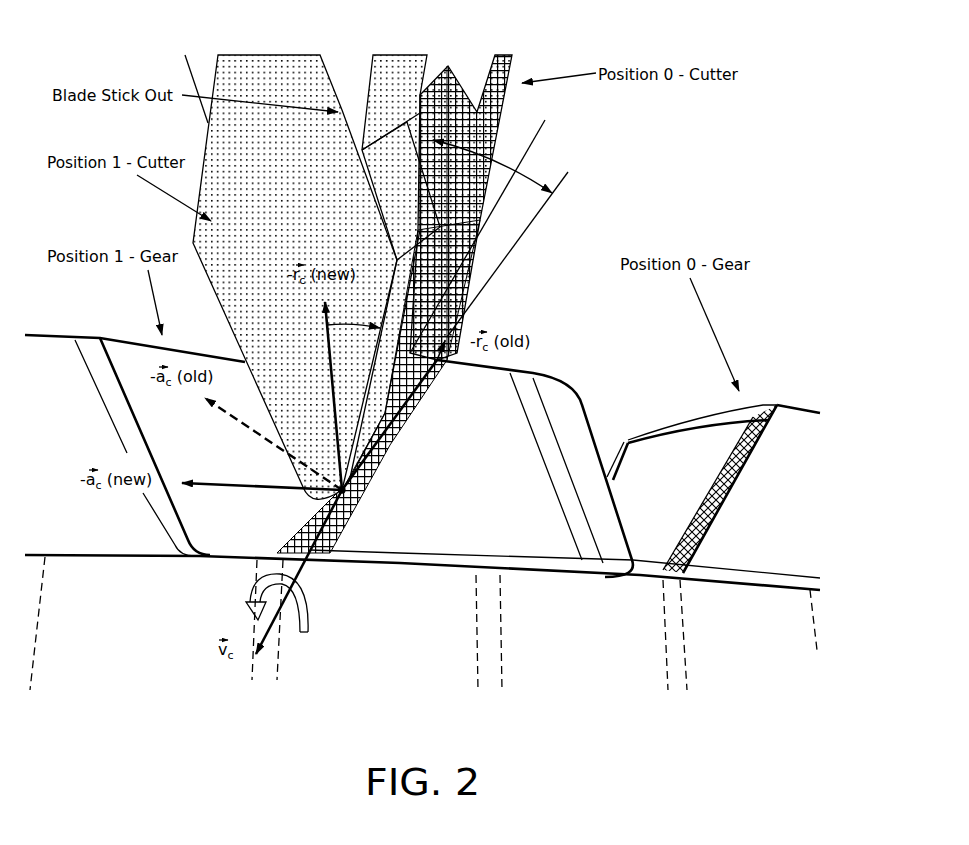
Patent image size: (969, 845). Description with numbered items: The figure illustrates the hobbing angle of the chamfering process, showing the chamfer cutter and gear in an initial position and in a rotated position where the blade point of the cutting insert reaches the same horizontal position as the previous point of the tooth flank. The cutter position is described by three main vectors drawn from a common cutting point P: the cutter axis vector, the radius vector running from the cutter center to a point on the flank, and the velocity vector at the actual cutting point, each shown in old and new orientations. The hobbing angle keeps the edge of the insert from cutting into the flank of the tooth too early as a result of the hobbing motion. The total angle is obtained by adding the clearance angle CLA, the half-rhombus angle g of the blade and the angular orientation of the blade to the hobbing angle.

The reference point on cutting edge P is at (351, 494).
The half-rhombus angle g is at (353, 311).
The clearance angle CLA is at (432, 137).